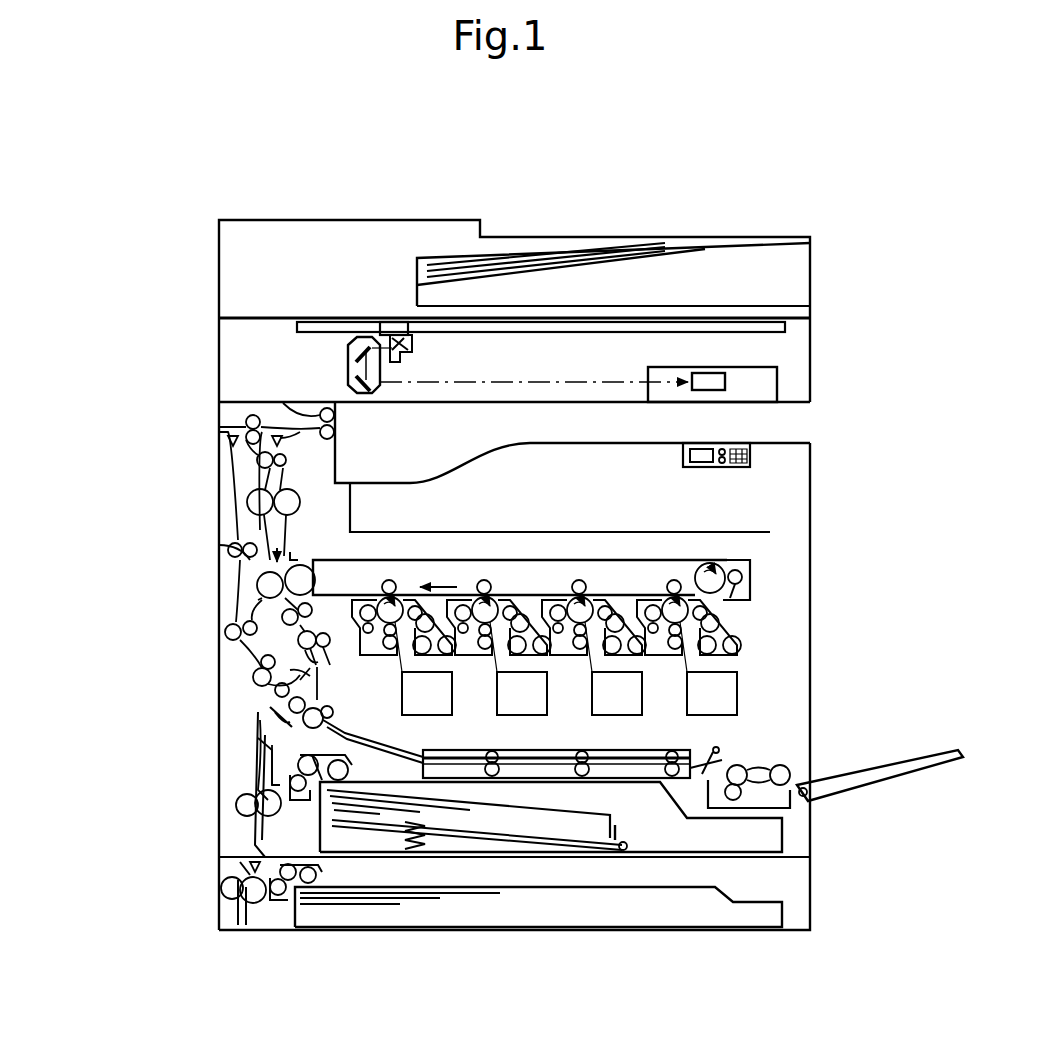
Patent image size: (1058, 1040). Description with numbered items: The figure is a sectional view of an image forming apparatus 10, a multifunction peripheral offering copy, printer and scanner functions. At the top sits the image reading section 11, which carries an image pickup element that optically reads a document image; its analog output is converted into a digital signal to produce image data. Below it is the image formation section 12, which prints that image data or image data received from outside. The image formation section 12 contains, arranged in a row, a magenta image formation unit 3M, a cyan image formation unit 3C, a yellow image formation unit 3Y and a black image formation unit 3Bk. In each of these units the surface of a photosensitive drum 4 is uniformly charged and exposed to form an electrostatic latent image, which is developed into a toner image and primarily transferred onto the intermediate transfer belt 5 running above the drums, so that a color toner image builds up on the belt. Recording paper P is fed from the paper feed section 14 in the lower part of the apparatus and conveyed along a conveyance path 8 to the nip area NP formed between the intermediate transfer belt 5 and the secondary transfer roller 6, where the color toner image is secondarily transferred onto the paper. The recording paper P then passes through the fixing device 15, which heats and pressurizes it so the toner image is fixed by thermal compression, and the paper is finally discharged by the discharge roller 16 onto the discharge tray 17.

The image forming apparatus 10 is at (526, 162).
The image reading section 11 is at (814, 291).
The image formation section 12 is at (770, 641).
The paper feed section 14 is at (777, 944).
The fixing device 15 is at (258, 502).
The discharge roller 16 is at (320, 412).
The discharge tray 17 is at (430, 478).
The magenta image formation unit 3M is at (391, 574).
The cyan image formation unit 3C is at (478, 577).
The yellow image formation unit 3Y is at (561, 577).
The black image formation unit 3Bk is at (660, 579).
The photosensitive drum 4 is at (476, 595).
The intermediate transfer belt 5 is at (686, 560).
The secondary transfer roller 6 is at (240, 600).
The conveyance path 8 is at (285, 708).
The nip area NP is at (243, 550).
The recording paper P is at (598, 801).